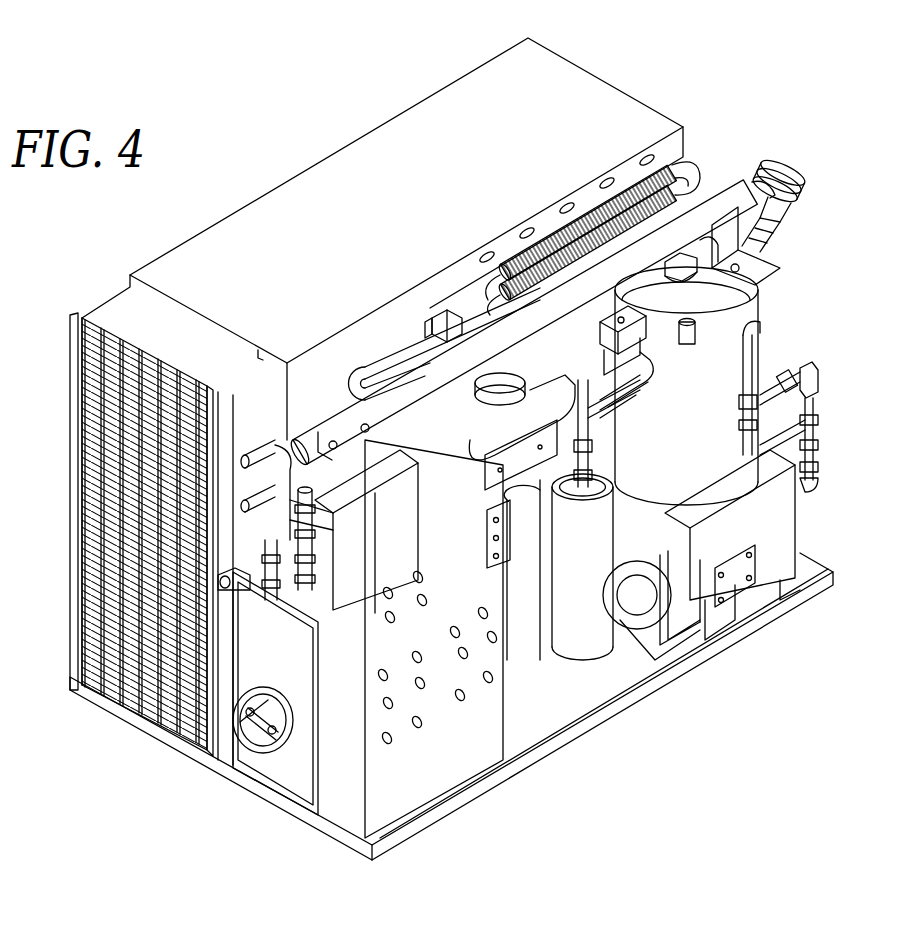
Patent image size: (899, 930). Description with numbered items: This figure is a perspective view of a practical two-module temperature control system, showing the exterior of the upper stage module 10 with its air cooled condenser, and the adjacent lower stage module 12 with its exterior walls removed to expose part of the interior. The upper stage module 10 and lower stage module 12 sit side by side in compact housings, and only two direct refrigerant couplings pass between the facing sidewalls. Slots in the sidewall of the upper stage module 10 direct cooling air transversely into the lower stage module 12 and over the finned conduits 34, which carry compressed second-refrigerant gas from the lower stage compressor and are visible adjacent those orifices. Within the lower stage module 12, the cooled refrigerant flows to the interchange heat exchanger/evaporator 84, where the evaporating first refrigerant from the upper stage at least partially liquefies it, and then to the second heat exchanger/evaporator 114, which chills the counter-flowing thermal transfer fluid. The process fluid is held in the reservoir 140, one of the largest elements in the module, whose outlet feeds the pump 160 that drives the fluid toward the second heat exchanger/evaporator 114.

The upper stage module 10 is at (552, 94).
The lower stage module 12 is at (778, 312).
The finned conduit desuperheater heat exchanger 34 is at (697, 166).
The interchange heat exchanger/evaporator 84 is at (455, 488).
The second heat exchanger/evaporator 114 is at (345, 565).
The reservoir 140 is at (763, 357).
The pump 160 is at (655, 600).